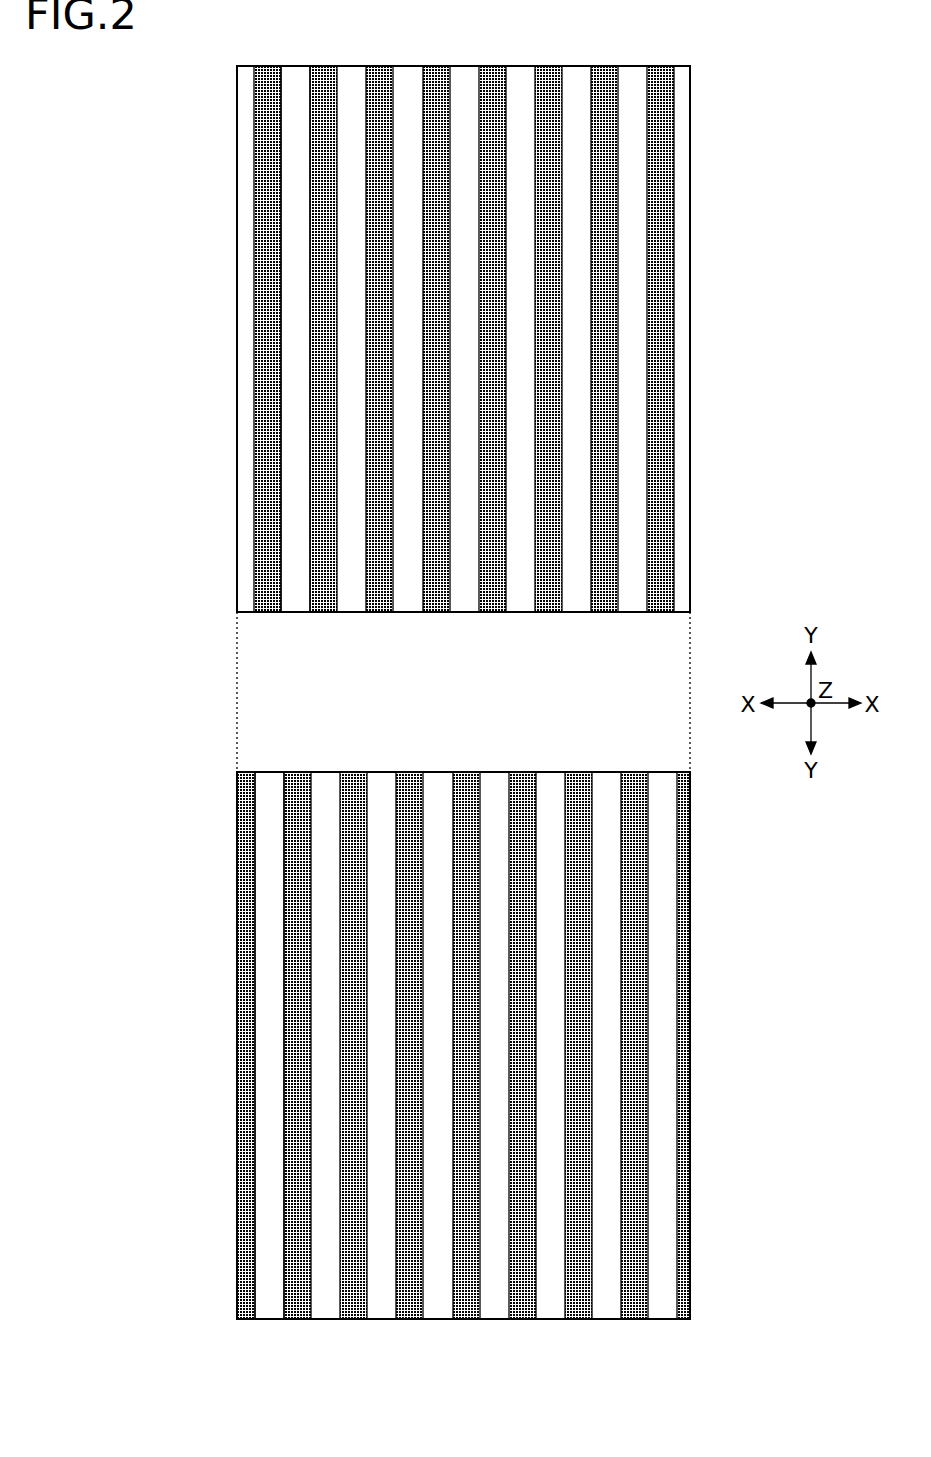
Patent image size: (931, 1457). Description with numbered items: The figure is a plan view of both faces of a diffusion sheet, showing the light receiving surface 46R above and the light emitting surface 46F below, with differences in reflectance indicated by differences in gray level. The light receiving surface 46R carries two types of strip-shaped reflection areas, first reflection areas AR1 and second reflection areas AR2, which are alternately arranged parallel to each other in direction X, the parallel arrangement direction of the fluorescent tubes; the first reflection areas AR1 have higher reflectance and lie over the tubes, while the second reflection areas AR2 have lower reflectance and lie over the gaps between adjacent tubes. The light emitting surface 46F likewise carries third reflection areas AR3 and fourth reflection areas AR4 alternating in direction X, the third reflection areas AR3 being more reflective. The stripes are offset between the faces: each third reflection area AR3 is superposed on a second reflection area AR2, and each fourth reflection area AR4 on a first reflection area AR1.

The light receiving surface 46R is at (703, 63).
The light emitting surface 46F is at (712, 770).
The first reflection area AR1 is at (263, 608).
The second reflection area AR2 is at (298, 607).
The third reflection area AR3 is at (302, 1317).
The fourth reflection area AR4 is at (263, 1313).